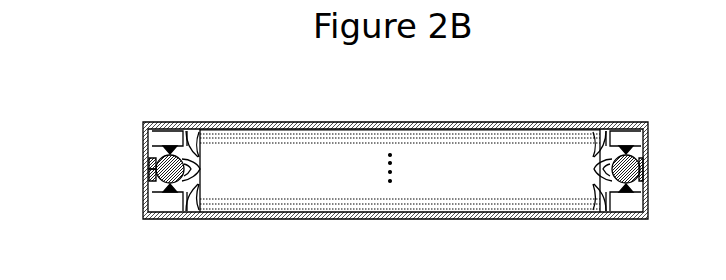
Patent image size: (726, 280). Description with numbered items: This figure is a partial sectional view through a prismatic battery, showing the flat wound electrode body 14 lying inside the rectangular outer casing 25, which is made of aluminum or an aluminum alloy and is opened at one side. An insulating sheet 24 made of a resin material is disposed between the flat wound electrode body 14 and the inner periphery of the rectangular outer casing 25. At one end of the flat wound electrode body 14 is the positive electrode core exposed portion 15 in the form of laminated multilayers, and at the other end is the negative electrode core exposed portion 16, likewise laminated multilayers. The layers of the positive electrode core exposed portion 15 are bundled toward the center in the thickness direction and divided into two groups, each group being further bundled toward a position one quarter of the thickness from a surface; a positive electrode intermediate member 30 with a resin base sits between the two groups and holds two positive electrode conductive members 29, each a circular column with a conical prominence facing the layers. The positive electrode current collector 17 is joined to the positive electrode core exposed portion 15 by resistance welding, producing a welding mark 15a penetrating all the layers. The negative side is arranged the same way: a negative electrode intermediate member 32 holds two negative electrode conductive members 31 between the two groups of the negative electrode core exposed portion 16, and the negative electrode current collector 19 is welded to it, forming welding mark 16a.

The flat wound electrode body 14 is at (512, 148).
The positive electrode core exposed portion 15 is at (604, 150).
The welding mark 15a is at (628, 146).
The negative electrode core exposed portion 16 is at (206, 128).
The welding mark 16a is at (172, 146).
The positive electrode current collector 17 is at (645, 133).
The negative electrode current collector 19 is at (143, 128).
The insulating sheet 24 is at (347, 126).
The rectangular outer casing 25 is at (305, 124).
The positive electrode conductive member 29 is at (642, 158).
The positive electrode intermediate member 30 is at (643, 170).
The negative electrode conductive member 31 is at (150, 163).
The negative electrode intermediate member 32 is at (150, 175).